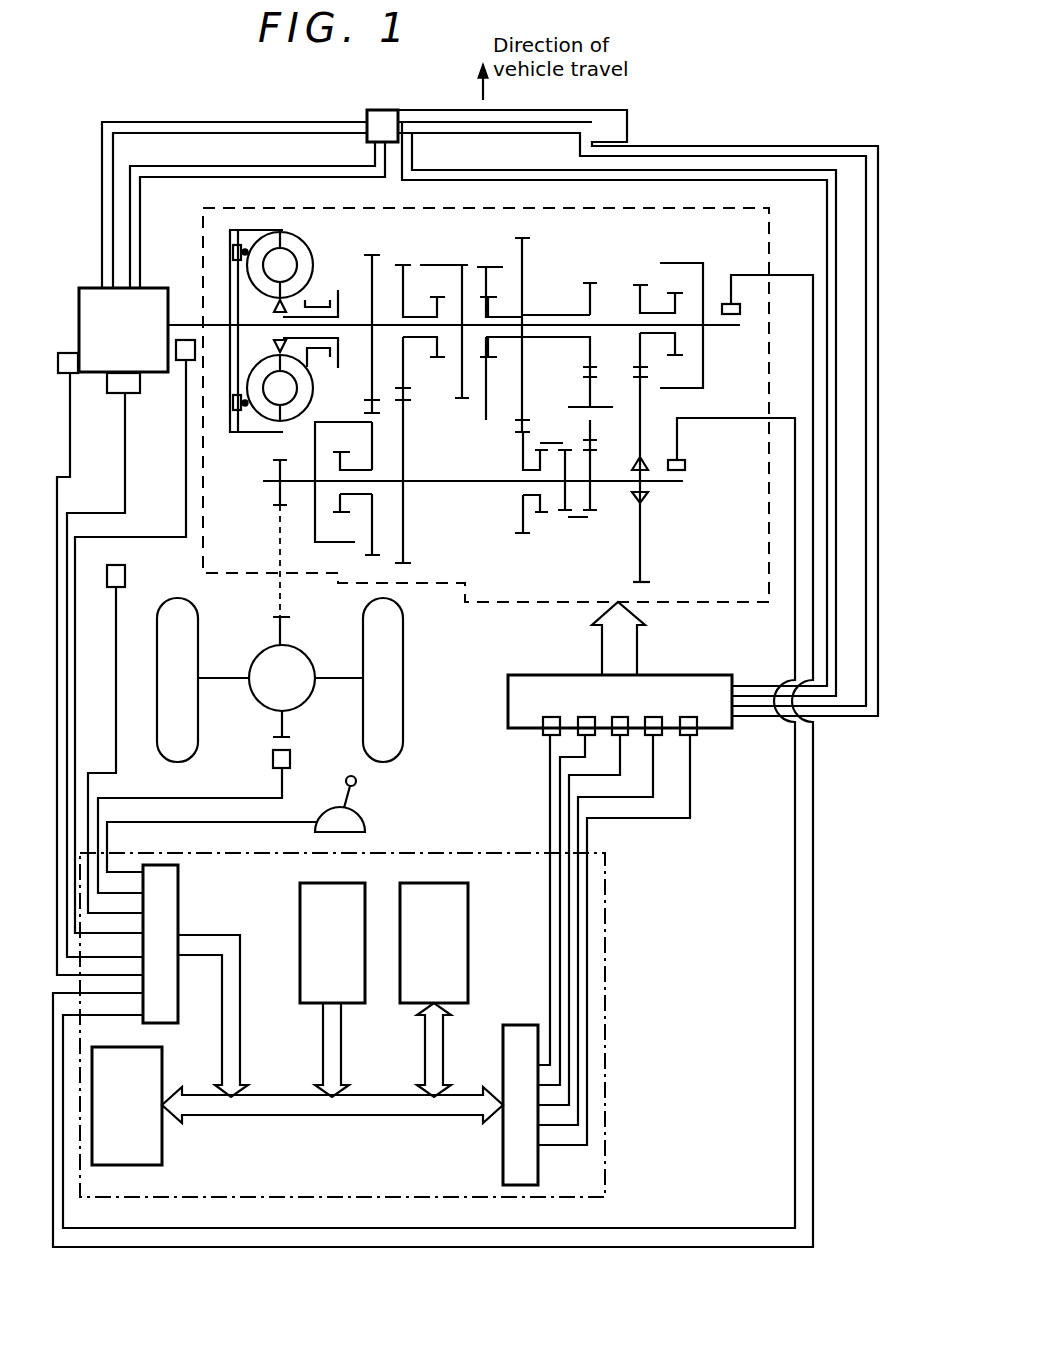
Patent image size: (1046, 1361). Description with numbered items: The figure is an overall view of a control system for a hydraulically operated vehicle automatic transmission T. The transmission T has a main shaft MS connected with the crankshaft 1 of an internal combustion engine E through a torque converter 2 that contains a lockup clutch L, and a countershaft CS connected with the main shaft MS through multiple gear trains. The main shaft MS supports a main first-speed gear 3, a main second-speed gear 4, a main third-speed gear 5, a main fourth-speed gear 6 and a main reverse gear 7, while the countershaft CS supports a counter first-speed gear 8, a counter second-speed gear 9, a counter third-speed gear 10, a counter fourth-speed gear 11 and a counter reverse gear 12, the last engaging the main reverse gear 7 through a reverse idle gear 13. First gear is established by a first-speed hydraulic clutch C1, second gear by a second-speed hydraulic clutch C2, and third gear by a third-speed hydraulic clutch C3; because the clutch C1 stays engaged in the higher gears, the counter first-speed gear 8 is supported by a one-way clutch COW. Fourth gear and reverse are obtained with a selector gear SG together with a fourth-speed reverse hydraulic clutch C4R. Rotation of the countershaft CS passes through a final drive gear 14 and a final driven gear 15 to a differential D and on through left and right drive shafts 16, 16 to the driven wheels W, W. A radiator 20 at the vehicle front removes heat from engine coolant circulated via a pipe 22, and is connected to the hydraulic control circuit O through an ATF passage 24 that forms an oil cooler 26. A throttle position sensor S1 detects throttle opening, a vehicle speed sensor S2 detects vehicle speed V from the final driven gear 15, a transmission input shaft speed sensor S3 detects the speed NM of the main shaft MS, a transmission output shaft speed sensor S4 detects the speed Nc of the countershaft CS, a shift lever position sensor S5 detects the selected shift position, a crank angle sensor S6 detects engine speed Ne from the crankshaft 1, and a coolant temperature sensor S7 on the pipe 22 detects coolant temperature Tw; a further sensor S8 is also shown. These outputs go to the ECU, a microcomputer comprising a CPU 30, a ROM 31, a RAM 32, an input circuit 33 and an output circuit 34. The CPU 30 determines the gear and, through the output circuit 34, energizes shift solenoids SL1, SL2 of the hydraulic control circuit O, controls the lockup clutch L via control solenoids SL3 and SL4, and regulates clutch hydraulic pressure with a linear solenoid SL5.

The crankshaft 1 is at (170, 318).
The torque converter 2 is at (306, 246).
The main first-speed gear 3 is at (640, 285).
The main second-speed gear 4 is at (401, 265).
The main third-speed gear 5 is at (370, 258).
The main fourth-speed gear 6 is at (524, 240).
The main reverse gear 7 is at (590, 283).
The counter first-speed gear 8 is at (652, 582).
The counter second-speed gear 9 is at (408, 565).
The counter third-speed gear 10 is at (370, 555).
The counter fourth-speed gear 11 is at (522, 536).
The counter reverse gear 12 is at (590, 520).
The reverse idle gear 13 is at (586, 375).
The final drive gear 14 is at (273, 492).
The final driven gear 15 is at (275, 617).
The drive shaft 16 is at (337, 693).
The radiator 20 is at (618, 128).
The pipe 22 is at (210, 170).
The ATF passage 24 is at (866, 206).
The oil cooler 26 is at (410, 125).
The CPU 30 is at (162, 1066).
The ROM 31 is at (300, 921).
The RAM 32 is at (468, 906).
The input circuit 33 is at (198, 906).
The output circuit 34 is at (503, 1150).
The internal combustion engine E is at (88, 287).
The lockup clutch L is at (230, 238).
The vehicle automatic transmission T is at (775, 215).
The main shaft MS is at (700, 330).
The countershaft CS is at (683, 483).
The first-speed hydraulic clutch C1 is at (703, 263).
The second-speed hydraulic clutch C2 is at (426, 265).
The third-speed hydraulic clutch C3 is at (337, 540).
The fourth-speed reverse hydraulic clutch C4R is at (477, 268).
The one-way clutch COW is at (646, 496).
The selector gear SG is at (576, 527).
The transmission input shaft rotational speed NM is at (433, 750).
The transmission output shaft rotational speed Nc is at (429, 812).
The engine speed Ne is at (130, 646).
The engine coolant temperature Tw is at (91, 674).
The vehicle traveling speed V is at (190, 830).
The differential D is at (300, 662).
The driven wheel W is at (395, 633).
The hydraulic control circuit O is at (508, 706).
The throttle position sensor S1 is at (125, 398).
The vehicle speed sensor S2 is at (292, 760).
The transmission input shaft speed sensor S3 is at (740, 309).
The transmission output shaft speed sensor S4 is at (686, 465).
The shift lever position sensor S5 is at (368, 825).
The crank angle sensor S6 is at (185, 362).
The coolant temperature sensor S7 is at (84, 374).
The sensor S8 is at (112, 590).
The shift solenoid SL1 is at (655, 745).
The shift solenoid SL2 is at (660, 738).
The control solenoid SL3 is at (545, 740).
The control solenoid SL4 is at (585, 740).
The linear solenoid SL5 is at (697, 736).
The electronic control unit ECU is at (610, 936).